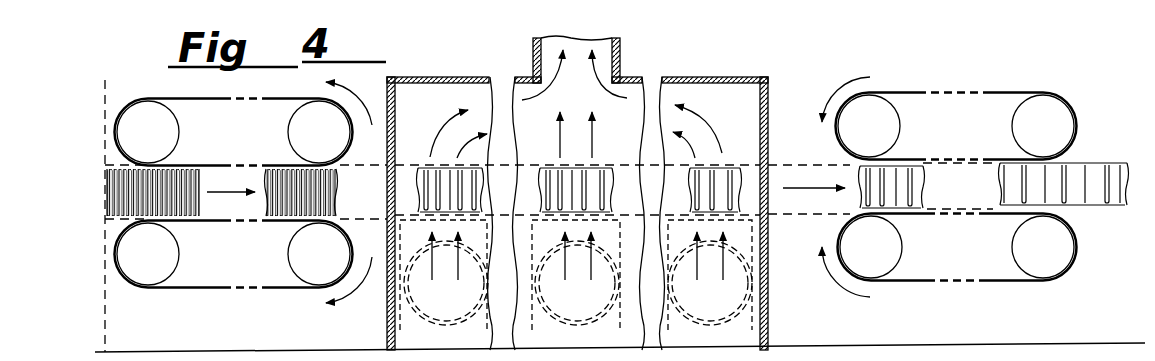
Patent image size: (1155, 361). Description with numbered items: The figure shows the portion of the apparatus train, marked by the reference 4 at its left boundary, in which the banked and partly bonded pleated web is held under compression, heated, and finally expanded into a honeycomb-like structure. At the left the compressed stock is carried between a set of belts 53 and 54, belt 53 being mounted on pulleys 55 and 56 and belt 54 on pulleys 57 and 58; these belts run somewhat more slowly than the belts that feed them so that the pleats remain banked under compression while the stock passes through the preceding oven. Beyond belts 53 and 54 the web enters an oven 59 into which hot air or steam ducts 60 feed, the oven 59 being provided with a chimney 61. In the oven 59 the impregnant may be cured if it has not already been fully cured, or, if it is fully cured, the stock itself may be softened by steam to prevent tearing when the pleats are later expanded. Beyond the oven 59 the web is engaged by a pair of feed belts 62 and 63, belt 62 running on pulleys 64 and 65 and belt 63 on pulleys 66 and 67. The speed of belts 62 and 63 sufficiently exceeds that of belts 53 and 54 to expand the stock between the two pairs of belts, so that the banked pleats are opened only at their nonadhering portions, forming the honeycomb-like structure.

The apparatus boundary 4 is at (96, 205).
The belt 53 is at (158, 98).
The belt 54 is at (172, 289).
The pulley 55 is at (180, 129).
The pulley 56 is at (287, 139).
The pulley 57 is at (180, 251).
The pulley 58 is at (287, 259).
The oven 59 is at (452, 77).
The hot air or steam ducts 60 is at (470, 327).
The chimney 61 is at (533, 54).
The feed belt 62 is at (905, 90).
The feed belt 63 is at (892, 282).
The pulley 64 is at (902, 123).
The pulley 65 is at (1010, 140).
The pulley 66 is at (904, 246).
The pulley 67 is at (1010, 261).